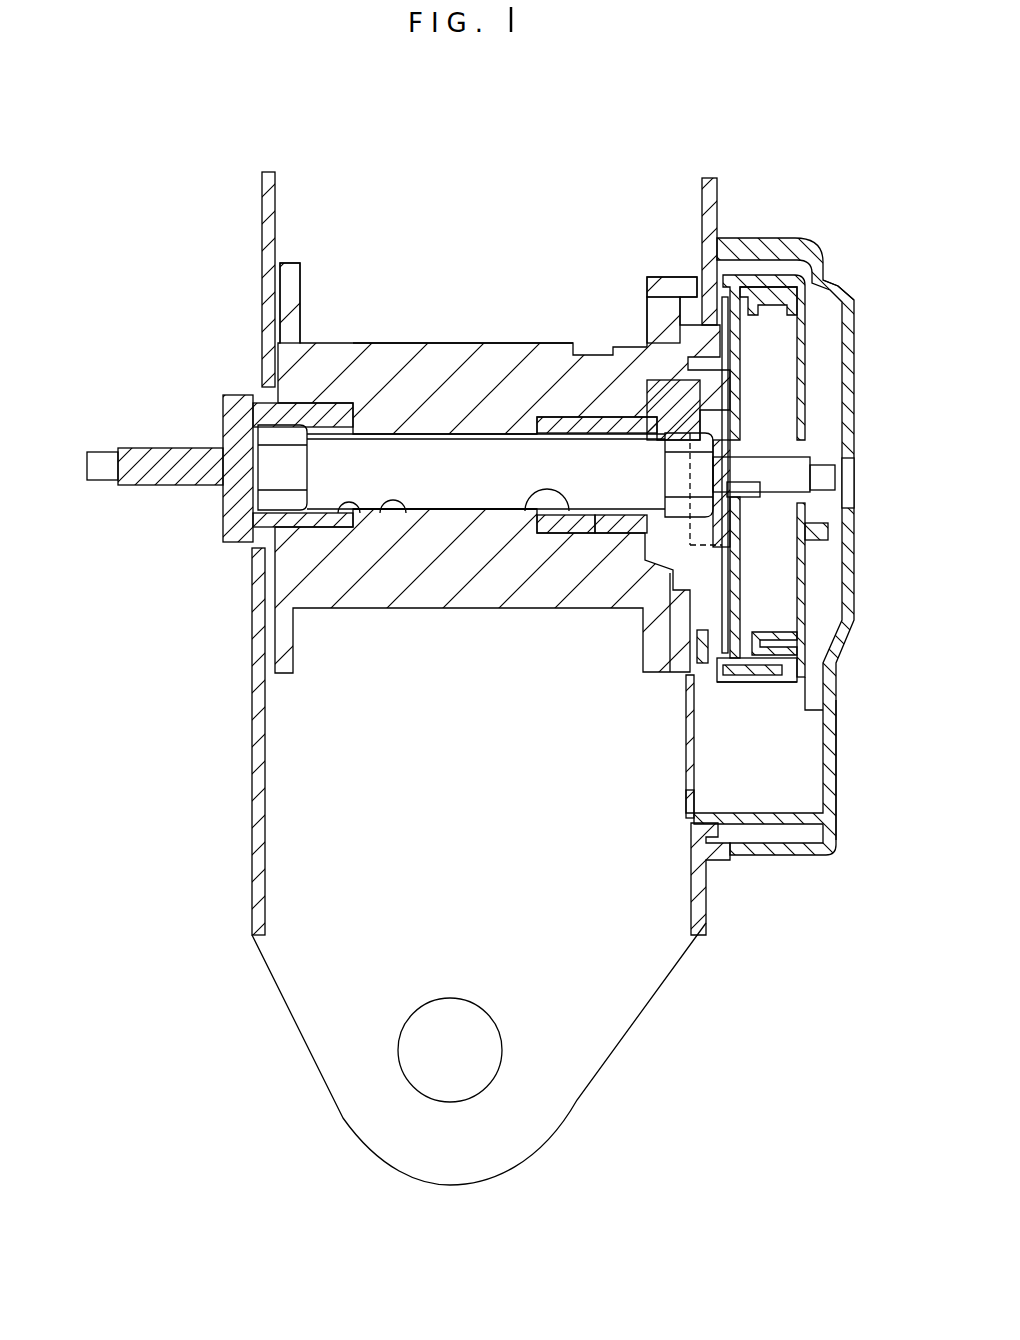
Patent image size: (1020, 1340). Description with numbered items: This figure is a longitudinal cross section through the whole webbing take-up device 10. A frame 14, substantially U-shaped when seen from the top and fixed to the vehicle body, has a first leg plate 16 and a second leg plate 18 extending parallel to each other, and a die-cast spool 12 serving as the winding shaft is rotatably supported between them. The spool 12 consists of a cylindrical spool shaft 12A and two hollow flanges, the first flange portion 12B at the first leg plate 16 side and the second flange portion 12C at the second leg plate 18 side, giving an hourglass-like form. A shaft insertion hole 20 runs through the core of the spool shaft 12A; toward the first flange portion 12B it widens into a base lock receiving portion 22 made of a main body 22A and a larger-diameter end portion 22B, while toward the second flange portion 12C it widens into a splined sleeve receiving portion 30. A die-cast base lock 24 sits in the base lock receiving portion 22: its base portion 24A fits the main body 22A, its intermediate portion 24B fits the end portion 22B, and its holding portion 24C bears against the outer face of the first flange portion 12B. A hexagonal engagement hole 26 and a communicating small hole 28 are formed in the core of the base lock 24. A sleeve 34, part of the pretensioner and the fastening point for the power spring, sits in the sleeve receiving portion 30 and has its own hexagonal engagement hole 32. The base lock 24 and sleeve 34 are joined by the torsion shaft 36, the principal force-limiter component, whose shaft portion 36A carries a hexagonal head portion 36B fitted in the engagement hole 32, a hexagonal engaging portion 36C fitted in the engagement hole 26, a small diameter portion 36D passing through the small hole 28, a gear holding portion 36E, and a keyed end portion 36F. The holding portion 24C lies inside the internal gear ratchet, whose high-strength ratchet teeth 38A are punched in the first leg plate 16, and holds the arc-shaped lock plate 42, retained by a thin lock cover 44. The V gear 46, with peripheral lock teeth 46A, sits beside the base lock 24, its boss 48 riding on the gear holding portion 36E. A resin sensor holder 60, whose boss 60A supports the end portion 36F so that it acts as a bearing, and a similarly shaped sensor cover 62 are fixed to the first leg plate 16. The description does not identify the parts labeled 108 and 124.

The webbing take-up device 10 is at (627, 140).
The spool 12 is at (491, 443).
The spool shaft 12A is at (442, 357).
The first flange portion 12B is at (663, 283).
The second flange portion 12C is at (298, 298).
The frame 14 is at (258, 680).
The first leg plate 16 is at (720, 180).
The second leg plate 18 is at (278, 183).
The shaft insertion hole 20 is at (392, 500).
The base lock receiving portion 22 is at (573, 621).
The main body 22A is at (560, 540).
The end portion 22B is at (620, 560).
The base lock 24 is at (611, 484).
The base portion 24A is at (560, 417).
The intermediate portion 24B is at (663, 393).
The holding portion 24C is at (653, 325).
The engagement hole 26 is at (537, 512).
The small hole 28 is at (757, 492).
The sleeve receiving portion 30 is at (325, 413).
The engagement hole 32 is at (345, 500).
The sleeve 34 is at (172, 478).
The torsion shaft 36 is at (535, 472).
The shaft portion 36A is at (437, 520).
The head portion 36B is at (270, 505).
The engaging portion 36C is at (668, 476).
The small diameter portion 36D is at (753, 443).
The gear holding portion 36E is at (780, 437).
The end portion 36F is at (835, 480).
The ratchet teeth 38A is at (645, 747).
The lock plate 42 is at (812, 476).
The lock cover 44 is at (697, 327).
The V gear 46 is at (798, 674).
The lock teeth 46A is at (757, 690).
The boss 48 is at (813, 537).
The sensor holder 60 is at (811, 546).
The boss 60A is at (795, 455).
The sensor cover 62 is at (838, 342).
The connecting portion 108 is at (688, 795).
The cover wall 124 is at (833, 748).